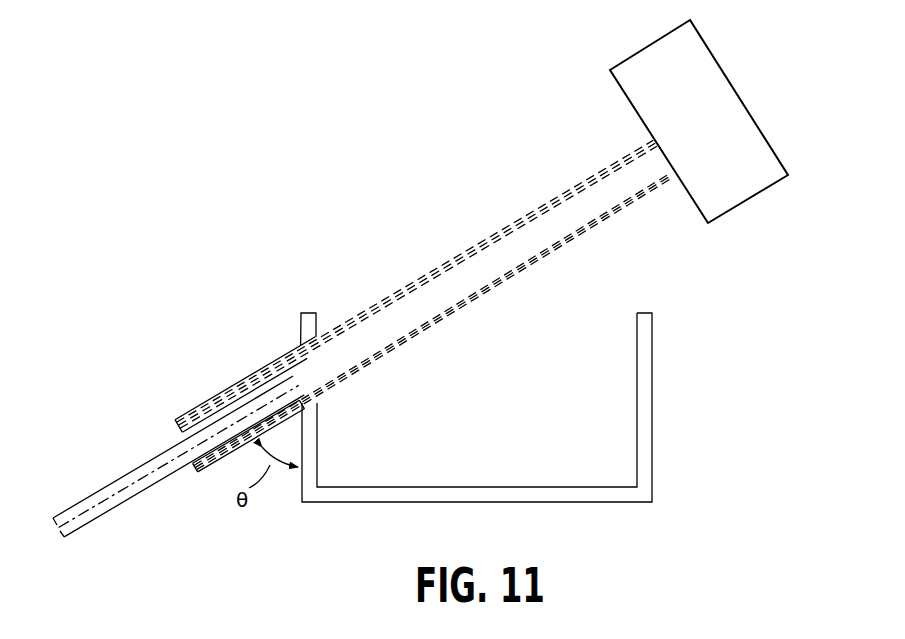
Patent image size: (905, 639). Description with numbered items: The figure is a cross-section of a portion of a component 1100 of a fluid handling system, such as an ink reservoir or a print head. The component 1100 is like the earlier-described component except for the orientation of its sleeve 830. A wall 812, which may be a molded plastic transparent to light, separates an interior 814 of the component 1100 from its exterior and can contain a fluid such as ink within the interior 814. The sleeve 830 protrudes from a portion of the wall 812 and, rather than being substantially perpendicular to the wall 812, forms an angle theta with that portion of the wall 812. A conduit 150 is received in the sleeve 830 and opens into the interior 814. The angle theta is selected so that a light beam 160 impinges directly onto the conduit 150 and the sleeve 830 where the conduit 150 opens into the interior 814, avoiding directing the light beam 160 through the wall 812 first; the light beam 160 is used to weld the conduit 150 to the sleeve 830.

The conduit 150 is at (151, 460).
The light beam 160 is at (521, 216).
The wall 812 is at (313, 328).
The interior 814 is at (596, 332).
The sleeve 830 is at (238, 382).
The component 1100 is at (715, 267).